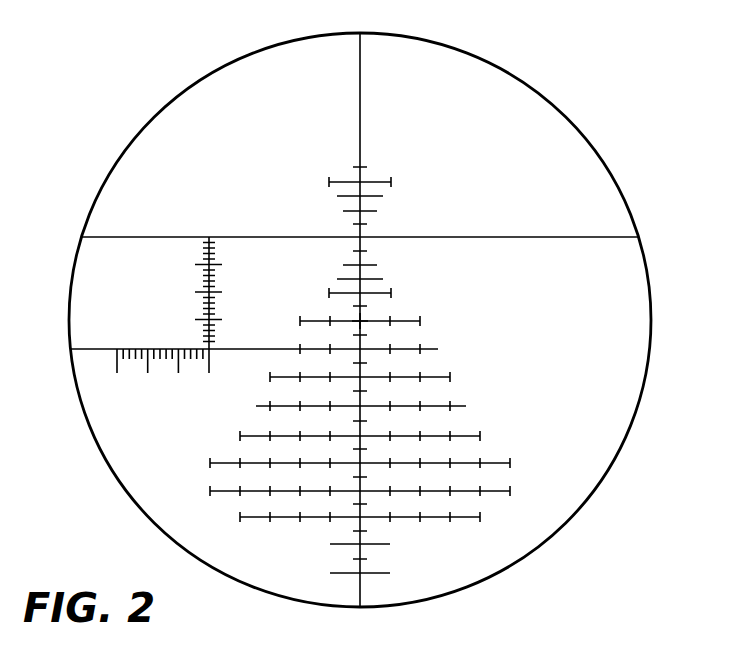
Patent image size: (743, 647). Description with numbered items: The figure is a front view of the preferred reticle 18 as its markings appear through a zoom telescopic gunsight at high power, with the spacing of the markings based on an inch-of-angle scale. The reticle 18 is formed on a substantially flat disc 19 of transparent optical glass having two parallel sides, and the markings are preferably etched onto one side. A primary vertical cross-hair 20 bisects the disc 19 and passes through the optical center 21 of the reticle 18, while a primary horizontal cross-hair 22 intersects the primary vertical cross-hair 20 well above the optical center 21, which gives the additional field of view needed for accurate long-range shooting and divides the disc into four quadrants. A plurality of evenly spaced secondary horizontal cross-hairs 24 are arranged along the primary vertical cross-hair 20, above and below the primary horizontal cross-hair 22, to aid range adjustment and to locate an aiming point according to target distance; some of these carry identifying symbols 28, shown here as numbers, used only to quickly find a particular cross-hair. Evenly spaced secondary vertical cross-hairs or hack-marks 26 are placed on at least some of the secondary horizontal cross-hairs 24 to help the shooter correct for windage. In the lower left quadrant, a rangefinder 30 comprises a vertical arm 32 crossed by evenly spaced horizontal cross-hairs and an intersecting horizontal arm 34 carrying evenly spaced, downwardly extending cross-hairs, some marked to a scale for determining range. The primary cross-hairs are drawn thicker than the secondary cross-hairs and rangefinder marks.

The reticle 18 is at (612, 74).
The disc 19 is at (478, 72).
The primary vertical cross-hair 20 is at (358, 135).
The optical center 21 is at (361, 318).
The primary horizontal cross-hair 22 is at (592, 237).
The secondary horizontal cross-hairs 24 is at (470, 434).
The secondary vertical cross-hairs or hack-marks 26 is at (420, 322).
The symbols 28 is at (578, 484).
The rangefinder 30 is at (163, 320).
The vertical arm 32 is at (242, 266).
The horizontal arm 34 is at (134, 372).